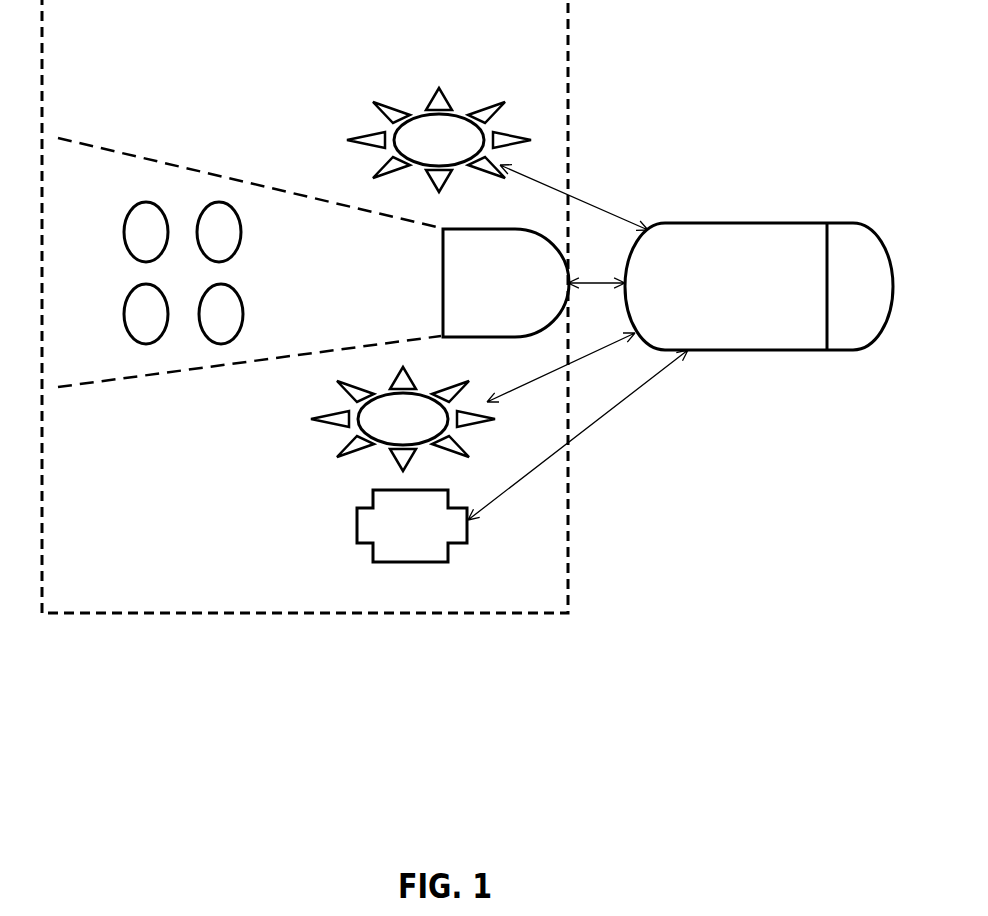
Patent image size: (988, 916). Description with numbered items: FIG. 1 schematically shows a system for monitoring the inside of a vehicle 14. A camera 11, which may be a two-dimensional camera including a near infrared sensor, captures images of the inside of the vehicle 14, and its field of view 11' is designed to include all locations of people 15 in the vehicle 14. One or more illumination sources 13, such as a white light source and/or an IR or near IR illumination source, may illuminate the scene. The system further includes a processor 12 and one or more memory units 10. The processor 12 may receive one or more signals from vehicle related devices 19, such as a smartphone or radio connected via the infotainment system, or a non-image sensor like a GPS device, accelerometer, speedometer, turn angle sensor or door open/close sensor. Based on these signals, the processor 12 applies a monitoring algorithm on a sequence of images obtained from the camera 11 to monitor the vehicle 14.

The memory unit 10 is at (842, 300).
The camera 11 is at (506, 283).
The field of view 11' is at (249, 225).
The processor 12 is at (743, 301).
The illumination source 13 is at (421, 279).
The vehicle 14 is at (180, 562).
The people 15 is at (202, 208).
The vehicle related device 19 is at (395, 541).